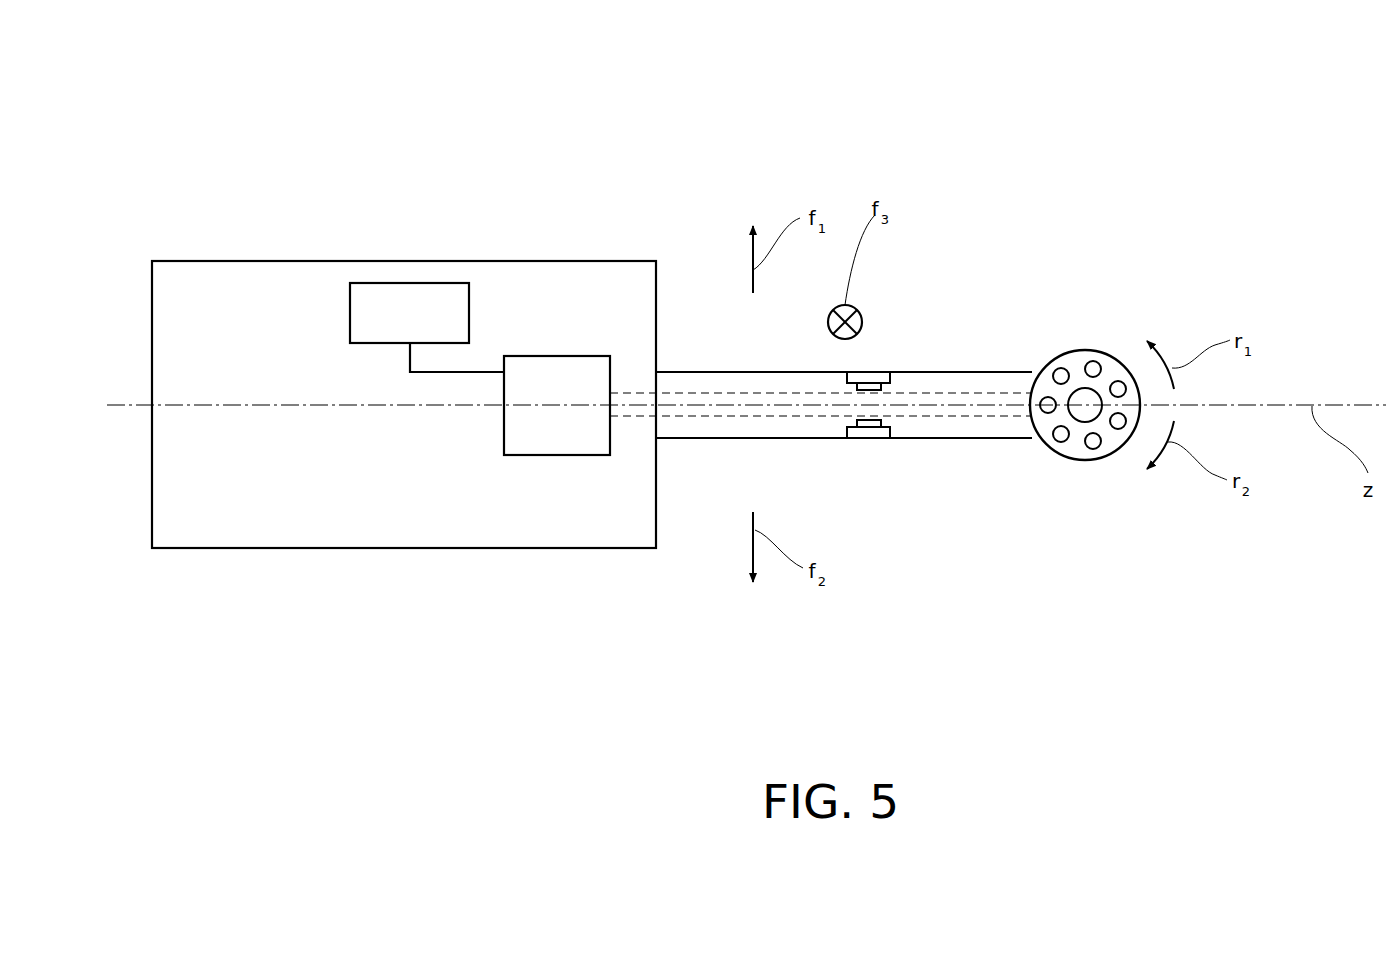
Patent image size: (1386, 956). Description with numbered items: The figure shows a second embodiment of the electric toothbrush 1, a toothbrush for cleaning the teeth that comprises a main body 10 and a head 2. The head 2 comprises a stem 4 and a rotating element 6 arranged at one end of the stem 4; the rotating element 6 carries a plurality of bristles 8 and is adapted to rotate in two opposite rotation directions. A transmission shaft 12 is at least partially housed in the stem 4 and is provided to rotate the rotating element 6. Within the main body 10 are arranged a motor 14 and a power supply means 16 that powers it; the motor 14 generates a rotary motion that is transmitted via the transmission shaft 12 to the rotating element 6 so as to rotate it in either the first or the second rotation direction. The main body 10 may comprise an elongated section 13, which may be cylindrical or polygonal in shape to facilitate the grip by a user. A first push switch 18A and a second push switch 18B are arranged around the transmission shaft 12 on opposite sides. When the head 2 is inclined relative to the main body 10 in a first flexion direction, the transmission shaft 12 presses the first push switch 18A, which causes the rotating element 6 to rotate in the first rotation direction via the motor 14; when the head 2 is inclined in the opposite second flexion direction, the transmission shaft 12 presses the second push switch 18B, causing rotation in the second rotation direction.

The electric toothbrush 1 is at (1074, 183).
The head 2 is at (892, 442).
The stem 4 is at (703, 378).
The rotating element 6 is at (1112, 350).
The bristles 8 is at (1078, 388).
The main body 10 is at (653, 548).
The transmission shaft 12 is at (978, 387).
The elongated section 13 is at (202, 268).
The motor 14 is at (563, 362).
The power supply means 16 is at (410, 295).
The first push switch 18A is at (873, 372).
The second push switch 18B is at (873, 438).